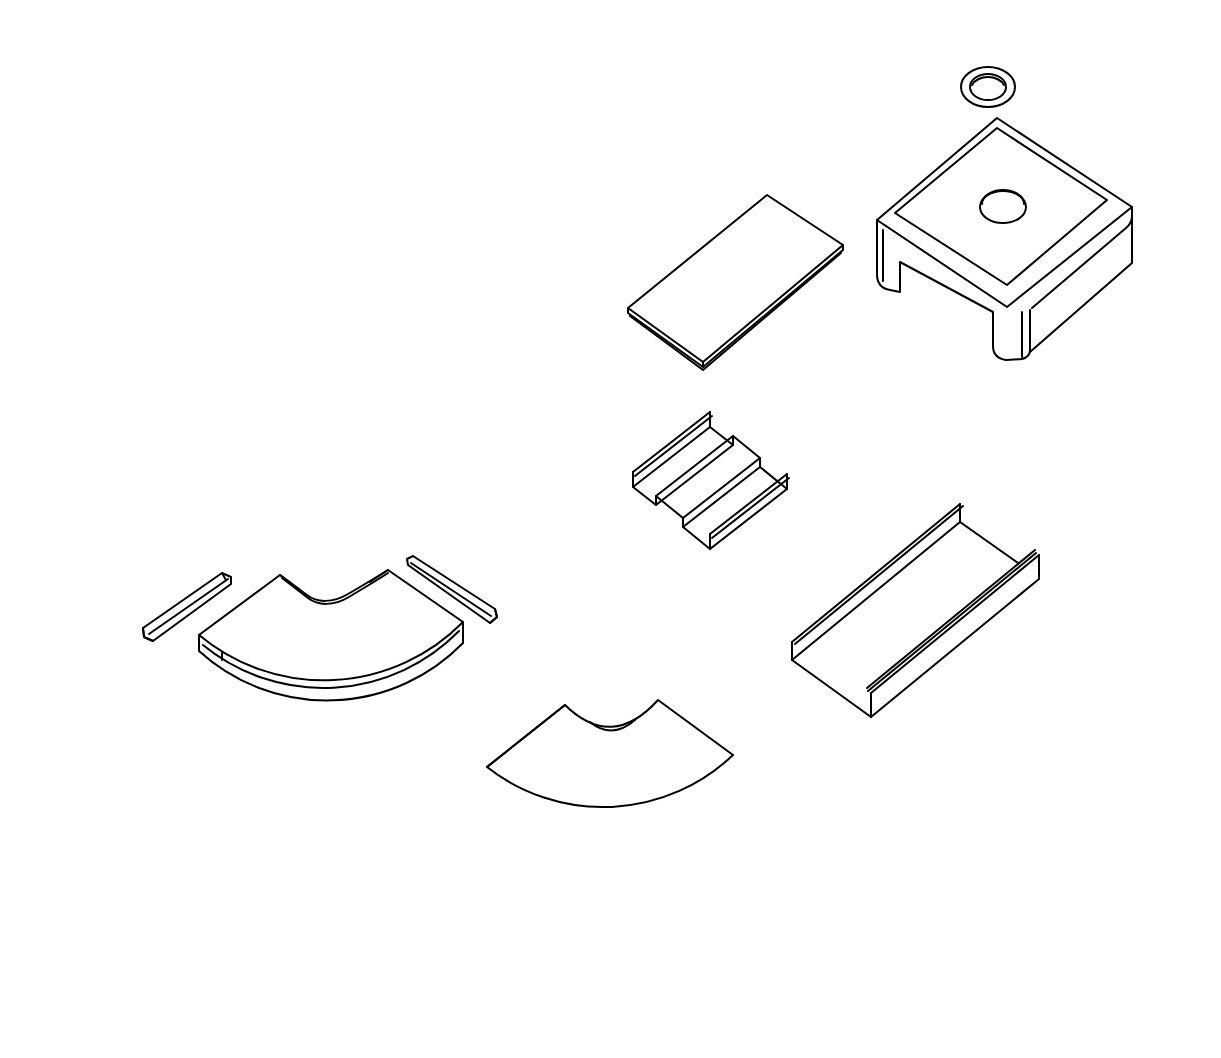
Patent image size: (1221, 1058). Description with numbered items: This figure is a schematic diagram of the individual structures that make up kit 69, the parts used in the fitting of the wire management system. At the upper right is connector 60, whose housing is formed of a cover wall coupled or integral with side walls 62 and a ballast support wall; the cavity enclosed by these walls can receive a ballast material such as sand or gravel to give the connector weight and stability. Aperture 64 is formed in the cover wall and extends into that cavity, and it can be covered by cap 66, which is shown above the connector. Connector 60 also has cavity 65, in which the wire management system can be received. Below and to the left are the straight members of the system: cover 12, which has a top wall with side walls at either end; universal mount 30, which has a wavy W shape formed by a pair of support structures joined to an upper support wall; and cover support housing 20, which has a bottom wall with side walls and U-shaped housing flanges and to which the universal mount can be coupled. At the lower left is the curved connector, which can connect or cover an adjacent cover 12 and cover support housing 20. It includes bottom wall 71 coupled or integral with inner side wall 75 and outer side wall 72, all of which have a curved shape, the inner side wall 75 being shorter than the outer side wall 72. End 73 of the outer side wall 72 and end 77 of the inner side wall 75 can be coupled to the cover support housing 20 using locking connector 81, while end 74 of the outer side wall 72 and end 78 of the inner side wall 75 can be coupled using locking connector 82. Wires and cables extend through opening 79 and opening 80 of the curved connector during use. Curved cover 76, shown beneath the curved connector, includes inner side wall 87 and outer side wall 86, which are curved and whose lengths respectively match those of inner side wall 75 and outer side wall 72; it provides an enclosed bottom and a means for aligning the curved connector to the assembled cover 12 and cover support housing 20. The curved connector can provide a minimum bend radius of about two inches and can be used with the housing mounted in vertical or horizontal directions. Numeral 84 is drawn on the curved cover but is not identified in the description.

The kit 69 is at (578, 121).
The cap 66 is at (970, 72).
The connector 60 is at (1039, 229).
The aperture 64 is at (987, 190).
The cavity 65 is at (985, 327).
The side walls 62 is at (1113, 258).
The cover 12 is at (702, 252).
The universal mount 30 is at (755, 448).
The cover support housing 20 is at (977, 632).
The bottom wall 71 is at (385, 670).
The outer side wall 72 is at (333, 700).
The end 73 is at (452, 652).
The end 74 is at (215, 668).
The inner side wall 75 is at (322, 600).
The curved cover 76 is at (325, 620).
The end 77 is at (377, 572).
The end 78 is at (287, 572).
The opening 79 is at (465, 622).
The opening 80 is at (200, 638).
The locking connector 81 is at (438, 567).
The locking connector 82 is at (173, 607).
The plate left edge 84 is at (520, 742).
The outer side wall 86 is at (642, 805).
The inner side wall 87 is at (612, 728).